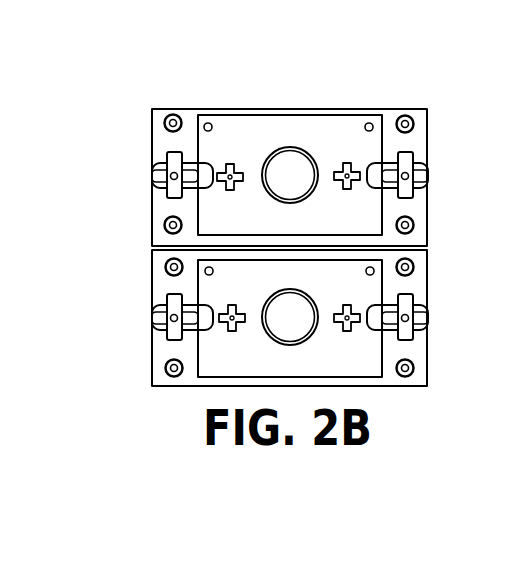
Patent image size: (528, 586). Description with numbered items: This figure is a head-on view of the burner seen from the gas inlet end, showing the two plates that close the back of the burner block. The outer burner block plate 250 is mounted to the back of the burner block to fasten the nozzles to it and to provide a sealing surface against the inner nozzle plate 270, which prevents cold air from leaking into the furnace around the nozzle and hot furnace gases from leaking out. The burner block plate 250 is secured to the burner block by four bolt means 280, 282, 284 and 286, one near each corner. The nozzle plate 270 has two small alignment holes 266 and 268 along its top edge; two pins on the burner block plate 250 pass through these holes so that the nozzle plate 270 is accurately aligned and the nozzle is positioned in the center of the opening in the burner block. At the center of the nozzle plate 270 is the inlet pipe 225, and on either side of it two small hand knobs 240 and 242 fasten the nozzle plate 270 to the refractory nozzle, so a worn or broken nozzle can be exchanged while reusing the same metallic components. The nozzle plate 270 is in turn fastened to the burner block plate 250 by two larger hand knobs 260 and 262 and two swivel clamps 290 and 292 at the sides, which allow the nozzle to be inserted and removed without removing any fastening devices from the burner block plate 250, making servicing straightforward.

The inlet pipe 225 is at (276, 148).
The small hand knob 240 is at (229, 163).
The small hand knob 242 is at (346, 162).
The burner block plate 250 is at (421, 214).
The larger hand knob 260 is at (145, 187).
The larger hand knob 262 is at (432, 164).
The alignment hole 266 is at (205, 118).
The alignment hole 268 is at (369, 121).
The nozzle plate 270 is at (305, 140).
The bolt means 280 is at (407, 116).
The bolt means 282 is at (412, 232).
The bolt means 284 is at (168, 231).
The bolt means 286 is at (165, 110).
The swivel clamp 290 is at (160, 187).
The swivel clamp 292 is at (420, 187).